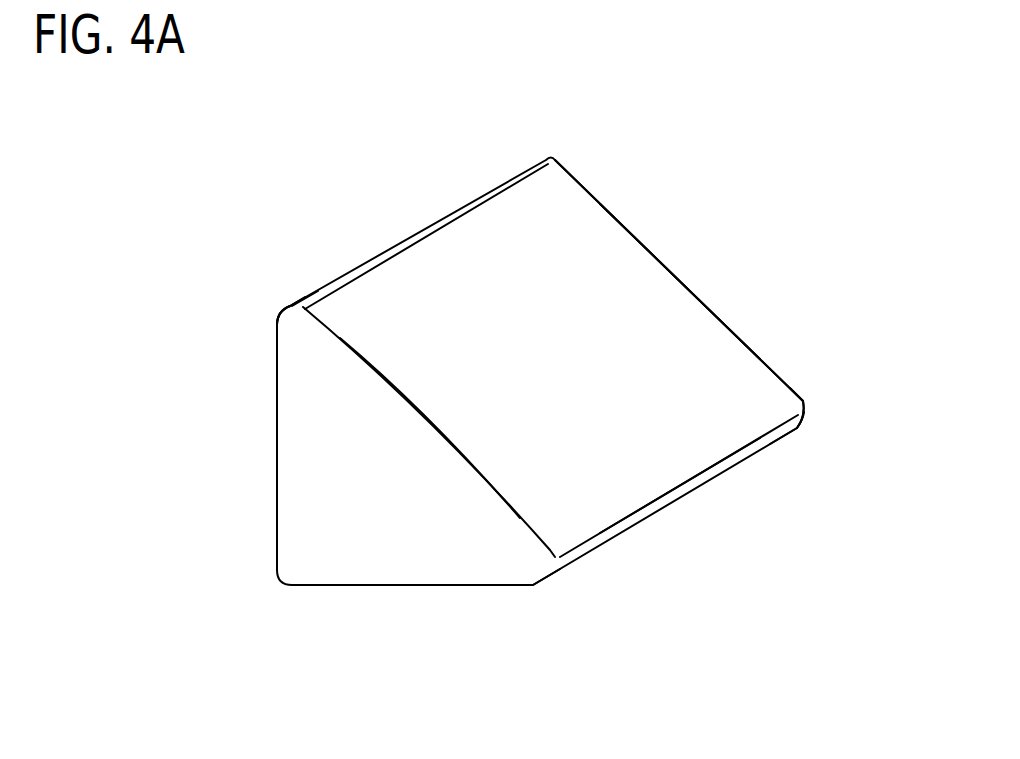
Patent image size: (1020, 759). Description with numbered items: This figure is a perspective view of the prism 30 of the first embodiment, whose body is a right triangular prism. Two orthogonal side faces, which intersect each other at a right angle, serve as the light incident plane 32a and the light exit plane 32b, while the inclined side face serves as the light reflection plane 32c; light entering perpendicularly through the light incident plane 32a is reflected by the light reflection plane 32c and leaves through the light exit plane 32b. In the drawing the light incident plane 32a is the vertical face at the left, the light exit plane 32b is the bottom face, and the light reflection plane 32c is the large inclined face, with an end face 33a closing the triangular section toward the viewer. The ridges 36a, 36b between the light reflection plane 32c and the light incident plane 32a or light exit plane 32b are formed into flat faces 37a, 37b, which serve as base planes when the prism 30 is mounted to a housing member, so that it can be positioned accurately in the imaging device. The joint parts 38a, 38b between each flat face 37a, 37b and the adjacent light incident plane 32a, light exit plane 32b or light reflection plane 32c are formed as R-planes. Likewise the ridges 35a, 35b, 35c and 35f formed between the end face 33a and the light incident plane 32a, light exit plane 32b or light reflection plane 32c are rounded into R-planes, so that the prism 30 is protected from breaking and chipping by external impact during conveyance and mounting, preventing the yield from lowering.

The prism 30 is at (781, 90).
The light incident plane 32a is at (277, 458).
The light exit plane 32b is at (315, 587).
The light reflection plane 32c is at (598, 218).
The end face 33a is at (288, 389).
The ridge 35a is at (277, 546).
The ridge 35b is at (487, 587).
The ridge 35c is at (462, 451).
The ridge 35f is at (690, 288).
The ridge 36a is at (290, 305).
The ridge 36b is at (673, 492).
The flat face 37a is at (288, 308).
The flat face 37b is at (797, 428).
The joint part 38a is at (305, 301).
The joint part 38b is at (533, 585).